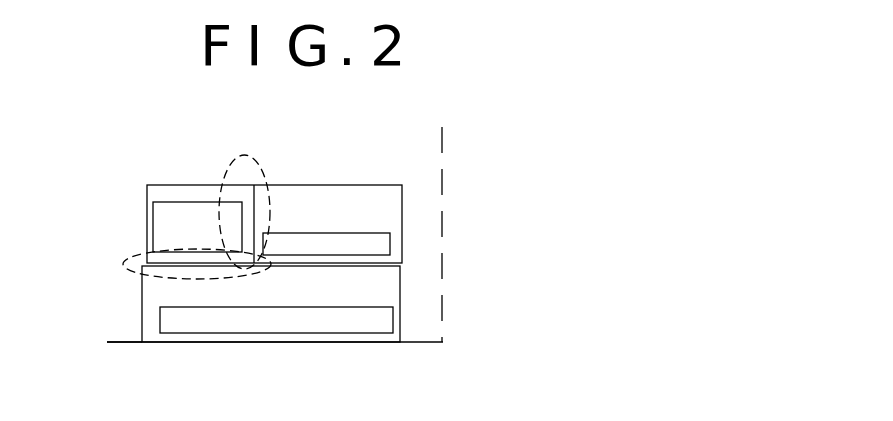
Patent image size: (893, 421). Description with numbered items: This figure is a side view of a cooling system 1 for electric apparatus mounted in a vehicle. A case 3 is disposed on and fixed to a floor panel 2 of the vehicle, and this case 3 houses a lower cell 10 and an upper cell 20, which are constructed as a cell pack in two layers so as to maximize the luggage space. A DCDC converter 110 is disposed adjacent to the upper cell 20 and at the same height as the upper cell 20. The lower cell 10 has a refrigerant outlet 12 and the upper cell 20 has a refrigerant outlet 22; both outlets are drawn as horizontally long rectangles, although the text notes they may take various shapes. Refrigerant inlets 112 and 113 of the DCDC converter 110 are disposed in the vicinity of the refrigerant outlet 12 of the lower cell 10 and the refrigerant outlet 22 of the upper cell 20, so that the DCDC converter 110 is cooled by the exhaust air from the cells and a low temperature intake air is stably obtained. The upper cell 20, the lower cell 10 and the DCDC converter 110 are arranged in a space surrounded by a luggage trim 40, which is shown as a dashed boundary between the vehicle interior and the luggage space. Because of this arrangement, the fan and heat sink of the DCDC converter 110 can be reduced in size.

The cooling system 1 is at (108, 160).
The floor panel 2 is at (120, 341).
The case 3 is at (403, 284).
The lower cell 10 is at (235, 343).
The refrigerant outlet 12 is at (310, 334).
The upper cell 20 is at (402, 208).
The refrigerant outlet 22 is at (390, 243).
The luggage trim 40 is at (444, 125).
The DCDC converter 110 is at (154, 219).
The refrigerant inlet 112 is at (246, 155).
The refrigerant inlet 113 is at (130, 266).